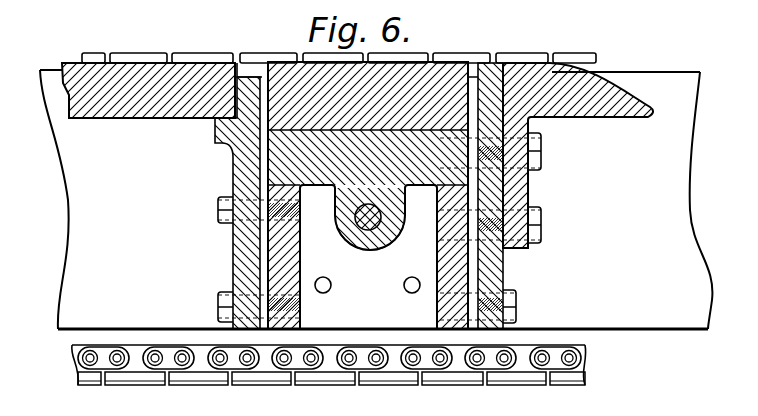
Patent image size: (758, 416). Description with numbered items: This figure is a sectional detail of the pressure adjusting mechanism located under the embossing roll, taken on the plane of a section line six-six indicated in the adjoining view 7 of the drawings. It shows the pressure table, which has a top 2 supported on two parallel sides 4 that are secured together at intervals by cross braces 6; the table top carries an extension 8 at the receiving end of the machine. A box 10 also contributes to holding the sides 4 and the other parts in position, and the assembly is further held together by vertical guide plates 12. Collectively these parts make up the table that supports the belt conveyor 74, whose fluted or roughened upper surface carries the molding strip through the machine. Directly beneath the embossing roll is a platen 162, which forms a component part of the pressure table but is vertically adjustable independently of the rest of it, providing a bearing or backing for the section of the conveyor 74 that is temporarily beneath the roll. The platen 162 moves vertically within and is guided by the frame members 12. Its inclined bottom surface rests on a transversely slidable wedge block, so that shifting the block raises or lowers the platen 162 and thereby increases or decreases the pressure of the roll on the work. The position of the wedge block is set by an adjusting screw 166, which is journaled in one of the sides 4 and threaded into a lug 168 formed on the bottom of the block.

The table top 2 is at (130, 104).
The sides 4 is at (678, 315).
The cross braces 6 is at (464, 31).
The section line 7- 7 is at (448, 5).
The extension 8 is at (605, 104).
The box 10 is at (287, 270).
The vertical guide plates 12 is at (243, 247).
The belt conveyor 74 is at (197, 58).
The platen 162 is at (448, 62).
The adjusting screw 166 is at (382, 222).
The lug 168 is at (357, 240).